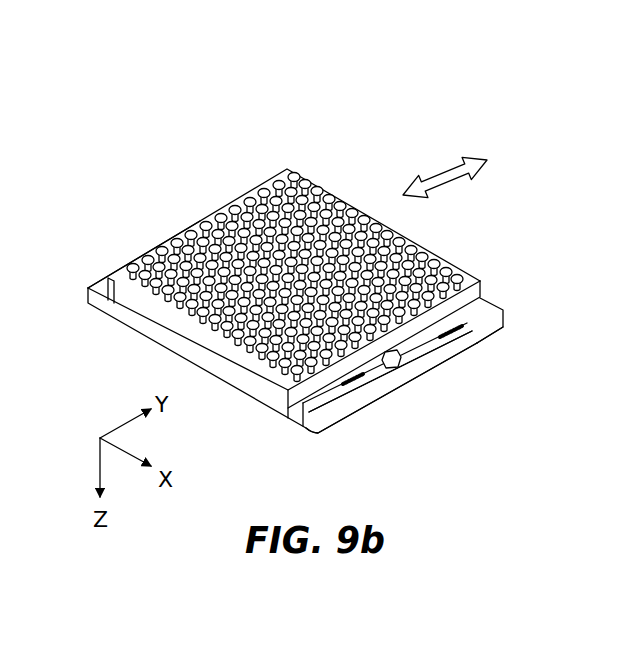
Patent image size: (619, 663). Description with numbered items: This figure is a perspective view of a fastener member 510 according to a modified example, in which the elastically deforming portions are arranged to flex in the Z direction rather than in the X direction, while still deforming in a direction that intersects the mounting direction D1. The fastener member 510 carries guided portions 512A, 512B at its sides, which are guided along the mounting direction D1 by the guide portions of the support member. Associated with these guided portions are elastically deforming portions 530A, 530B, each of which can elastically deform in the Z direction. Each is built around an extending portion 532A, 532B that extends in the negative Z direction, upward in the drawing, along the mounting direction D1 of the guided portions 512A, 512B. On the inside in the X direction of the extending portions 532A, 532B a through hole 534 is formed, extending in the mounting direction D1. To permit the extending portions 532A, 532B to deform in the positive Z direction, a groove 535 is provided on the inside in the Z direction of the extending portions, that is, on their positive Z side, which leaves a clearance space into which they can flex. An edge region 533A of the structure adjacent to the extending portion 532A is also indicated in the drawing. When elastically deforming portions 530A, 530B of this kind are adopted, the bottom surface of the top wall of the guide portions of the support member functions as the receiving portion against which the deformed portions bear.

The fastener member 510 is at (267, 112).
The elastically deforming portion 530B is at (194, 208).
The extending portion 532B is at (181, 218).
The guided portion 512B is at (82, 285).
The guided portion 512A is at (506, 311).
The through hole 534 is at (456, 330).
The groove 535 is at (479, 345).
The elastically deforming portion 530A is at (461, 373).
The extending portion 532A is at (414, 383).
The channel step edge 533A is at (385, 410).
The mounting direction D1 is at (450, 178).